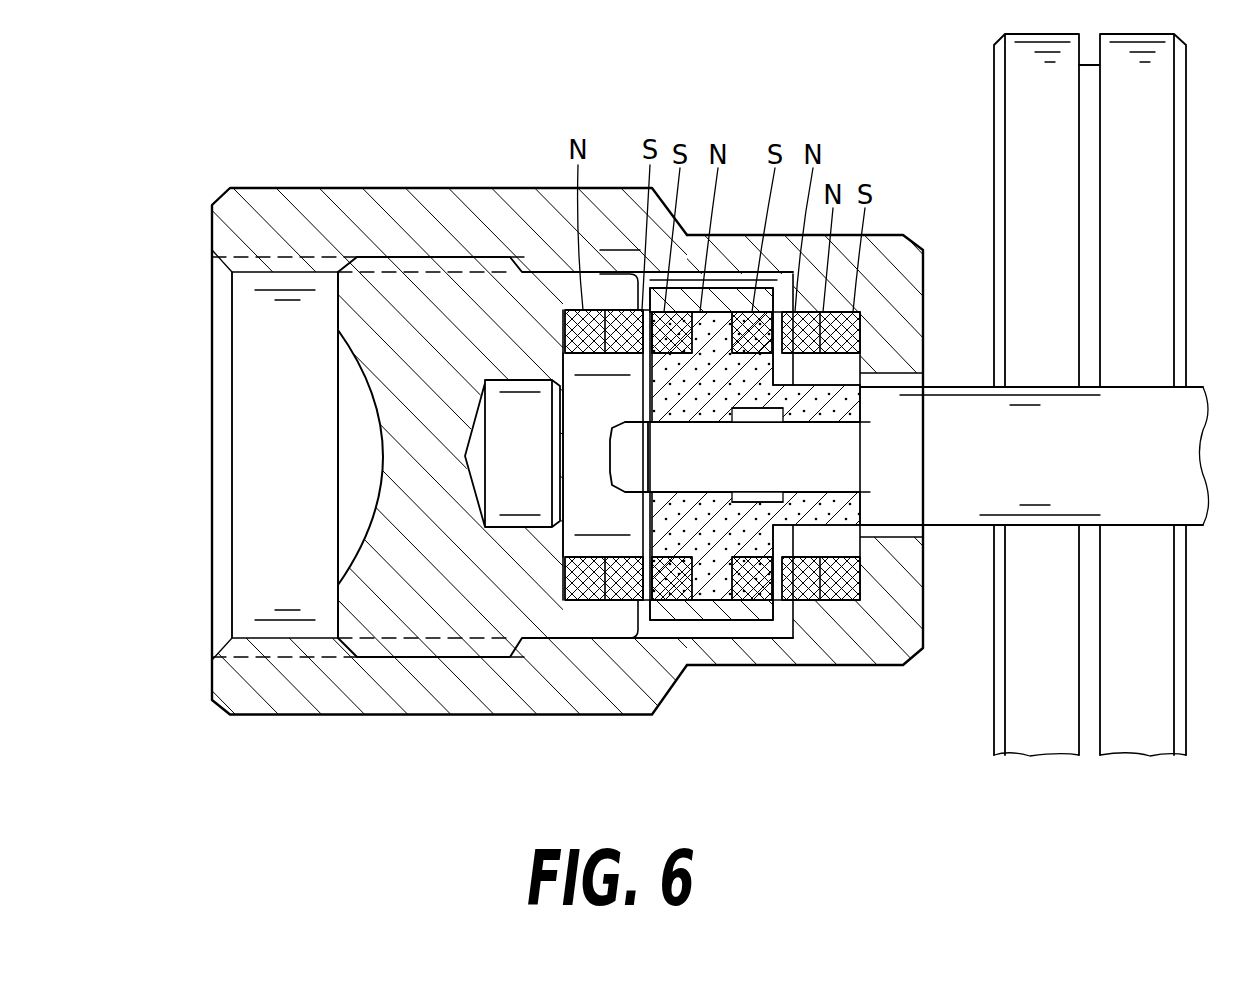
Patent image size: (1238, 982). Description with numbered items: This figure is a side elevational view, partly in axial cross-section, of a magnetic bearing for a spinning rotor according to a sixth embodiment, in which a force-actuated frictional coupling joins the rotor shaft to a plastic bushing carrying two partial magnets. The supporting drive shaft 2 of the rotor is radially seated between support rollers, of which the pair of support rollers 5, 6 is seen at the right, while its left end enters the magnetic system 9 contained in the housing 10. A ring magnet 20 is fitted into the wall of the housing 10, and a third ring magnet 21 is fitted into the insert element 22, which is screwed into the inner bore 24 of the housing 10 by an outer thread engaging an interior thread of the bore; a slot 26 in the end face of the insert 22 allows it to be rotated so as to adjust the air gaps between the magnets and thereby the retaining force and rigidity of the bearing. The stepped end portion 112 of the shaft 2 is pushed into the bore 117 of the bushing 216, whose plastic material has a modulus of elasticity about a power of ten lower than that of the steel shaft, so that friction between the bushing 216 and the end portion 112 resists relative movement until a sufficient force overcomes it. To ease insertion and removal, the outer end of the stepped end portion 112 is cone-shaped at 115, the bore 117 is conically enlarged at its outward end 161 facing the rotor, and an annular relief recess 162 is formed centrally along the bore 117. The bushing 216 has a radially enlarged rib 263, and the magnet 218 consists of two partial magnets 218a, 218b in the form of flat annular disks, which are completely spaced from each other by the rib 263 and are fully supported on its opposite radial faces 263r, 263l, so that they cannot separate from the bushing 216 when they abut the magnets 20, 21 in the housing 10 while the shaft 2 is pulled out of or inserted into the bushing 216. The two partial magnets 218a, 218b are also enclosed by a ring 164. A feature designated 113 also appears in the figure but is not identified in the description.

The supporting drive shaft 2 is at (978, 503).
The support roller 5 is at (1065, 745).
The support roller 6 is at (1090, 395).
The magnetic system 9 is at (626, 145).
The housing 10 is at (332, 700).
The ring magnet 20 is at (860, 607).
The third ring magnet 21 is at (603, 605).
The insert element 22 is at (470, 625).
The inner bore 24 is at (257, 460).
The slot 26 is at (352, 478).
The stepped end portion 112 is at (845, 468).
The shaft arrangement 113 is at (872, 443).
The cone-shaped outer end 115 is at (632, 484).
The bore 117 is at (672, 417).
The conically enlarged outward end 161 is at (855, 408).
The annular relief recess 162 is at (752, 503).
The ring 164 is at (630, 607).
The bushing 216 is at (668, 383).
The magnet 218 is at (714, 632).
The partial magnet 218a is at (787, 607).
The partial magnet 218b is at (650, 625).
The rib 263 is at (724, 312).
The radial face of rib 263l is at (688, 607).
The radial face of rib 263r is at (740, 607).